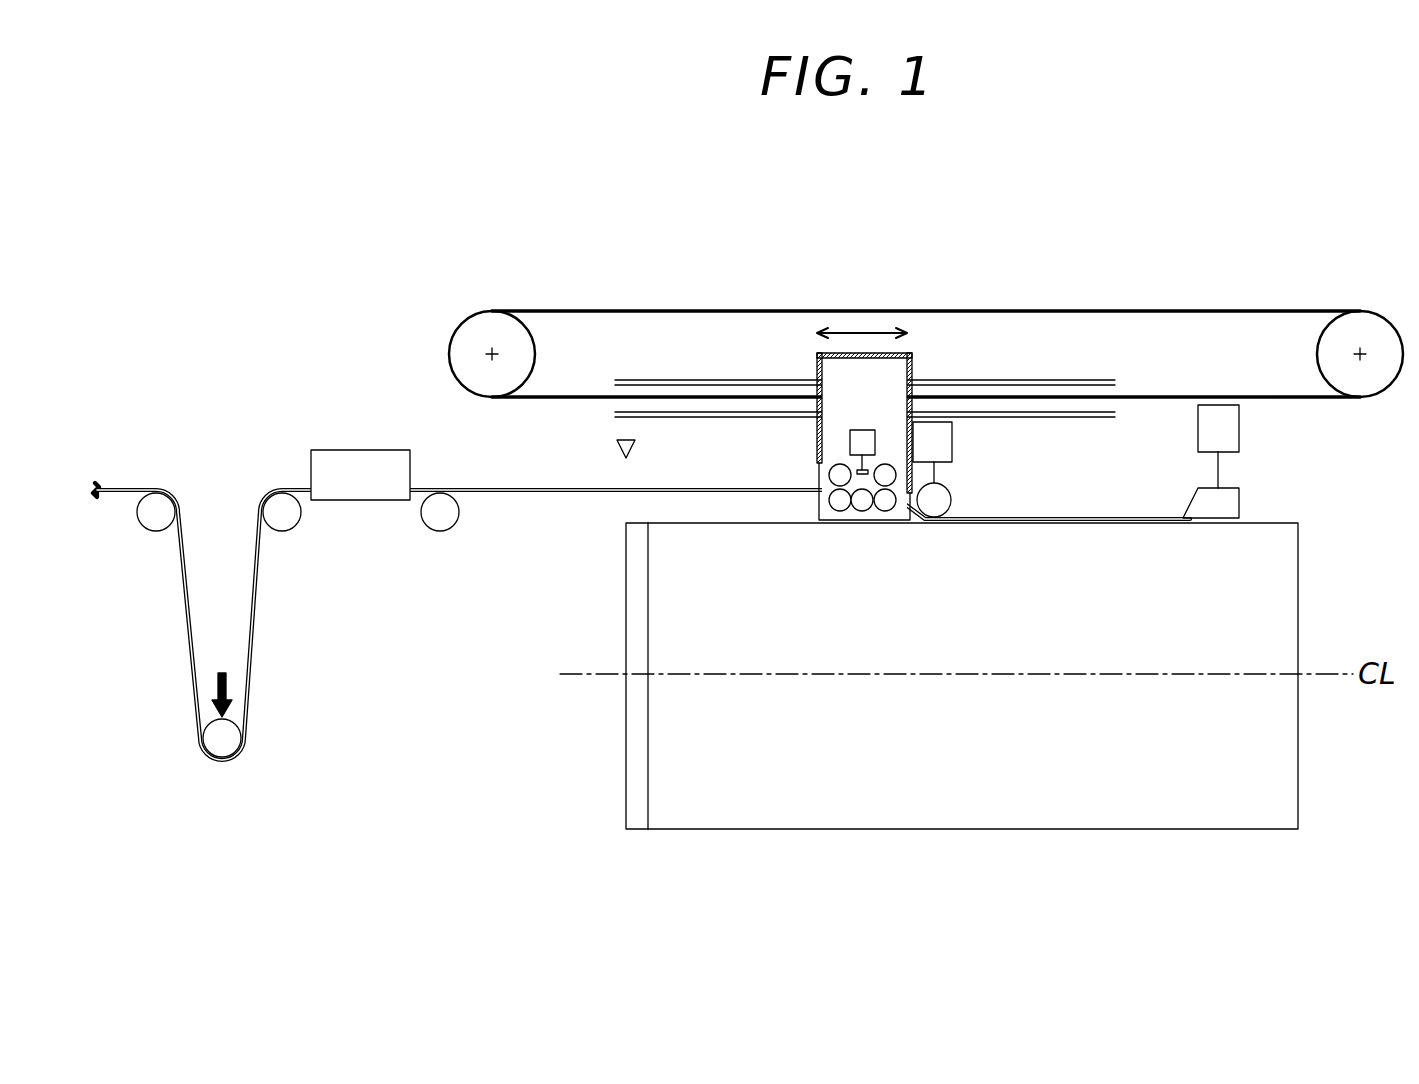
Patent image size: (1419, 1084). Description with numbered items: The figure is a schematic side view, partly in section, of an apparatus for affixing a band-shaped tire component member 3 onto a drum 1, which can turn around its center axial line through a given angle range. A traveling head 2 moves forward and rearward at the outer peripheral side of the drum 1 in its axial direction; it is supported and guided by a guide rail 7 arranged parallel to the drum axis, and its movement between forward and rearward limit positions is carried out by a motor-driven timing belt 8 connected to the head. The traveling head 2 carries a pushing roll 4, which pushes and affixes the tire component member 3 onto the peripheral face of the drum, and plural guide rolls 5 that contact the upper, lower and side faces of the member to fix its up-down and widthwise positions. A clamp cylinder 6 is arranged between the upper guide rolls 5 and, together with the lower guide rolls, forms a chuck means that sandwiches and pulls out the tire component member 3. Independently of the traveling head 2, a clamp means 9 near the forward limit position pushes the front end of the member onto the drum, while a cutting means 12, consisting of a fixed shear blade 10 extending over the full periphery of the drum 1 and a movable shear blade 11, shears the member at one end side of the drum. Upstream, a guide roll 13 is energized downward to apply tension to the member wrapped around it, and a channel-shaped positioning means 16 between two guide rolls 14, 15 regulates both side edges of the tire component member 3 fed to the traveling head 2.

The drum 1 is at (936, 782).
The traveling head 2 is at (921, 340).
The band-shaped tire component member 3 is at (712, 494).
The pushing roll 4 is at (945, 514).
The guide rolls 5 is at (862, 507).
The clamp cylinder 6 is at (850, 443).
The guide rail 7 is at (689, 369).
The timing belt 8 is at (1153, 310).
The clamp means 9 is at (1232, 497).
The fixed shear blade 10 is at (636, 538).
The movable shear blade 11 is at (621, 461).
The cutting means 12 is at (497, 535).
The guide roll 13 is at (222, 743).
The guide roll 14 is at (437, 522).
The guide roll 15 is at (283, 522).
The channel-shaped positioning means 16 is at (361, 434).